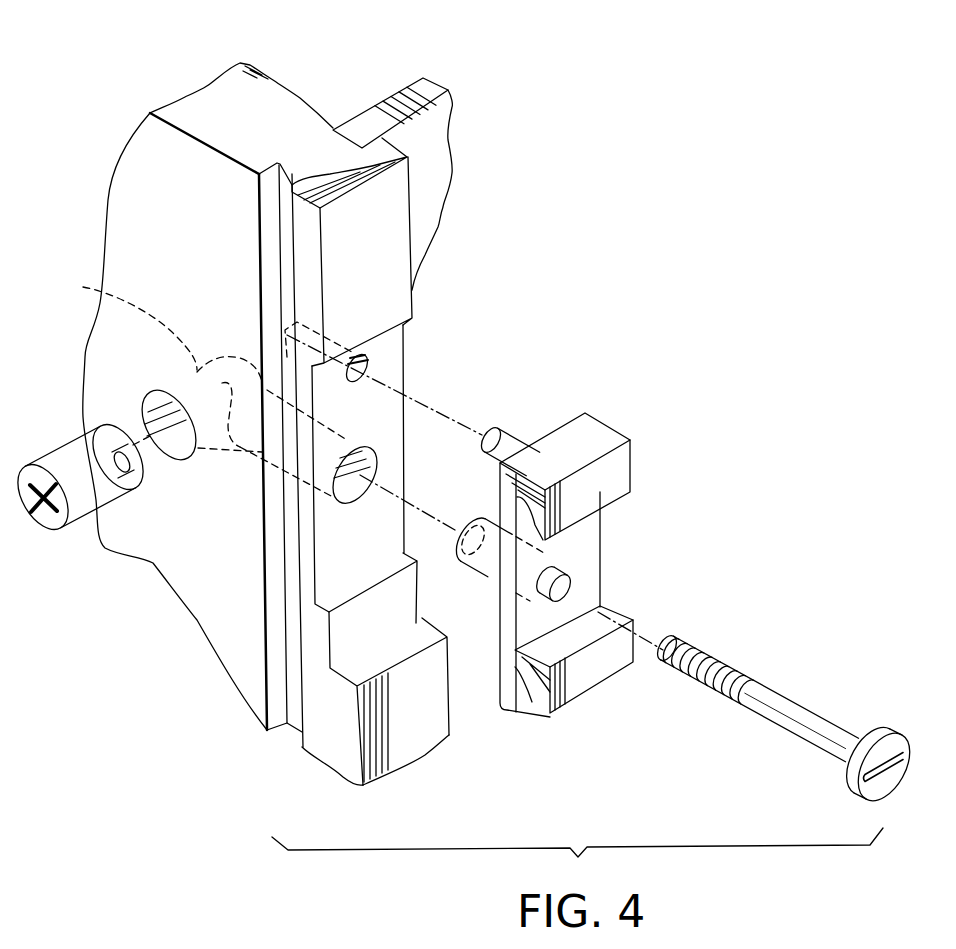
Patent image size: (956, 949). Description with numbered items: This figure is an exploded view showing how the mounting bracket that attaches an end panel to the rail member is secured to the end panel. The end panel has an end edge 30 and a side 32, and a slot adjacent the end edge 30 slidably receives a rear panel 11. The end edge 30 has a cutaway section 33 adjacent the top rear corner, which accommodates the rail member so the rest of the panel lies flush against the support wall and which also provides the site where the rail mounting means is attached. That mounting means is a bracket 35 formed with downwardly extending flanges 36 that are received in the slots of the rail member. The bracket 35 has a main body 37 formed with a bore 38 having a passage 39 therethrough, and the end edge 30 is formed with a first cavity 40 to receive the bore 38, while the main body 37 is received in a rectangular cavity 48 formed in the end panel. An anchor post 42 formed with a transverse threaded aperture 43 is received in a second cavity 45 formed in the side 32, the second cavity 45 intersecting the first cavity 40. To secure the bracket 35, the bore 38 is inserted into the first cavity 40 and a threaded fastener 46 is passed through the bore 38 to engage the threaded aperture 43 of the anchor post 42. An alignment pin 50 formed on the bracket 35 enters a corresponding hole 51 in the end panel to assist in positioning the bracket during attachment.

The rear panel 11 is at (417, 93).
The end edge 30 is at (425, 728).
The side 32 is at (195, 215).
The cutaway section 33 is at (390, 245).
The bracket 35 is at (572, 562).
The flange 36 is at (617, 462).
The main body 37 is at (507, 603).
The bore 38 is at (477, 515).
The passage 39 is at (577, 582).
The first cavity 40 is at (240, 440).
The anchor post 42 is at (80, 523).
The threaded aperture 43 is at (132, 487).
The second cavity 45 is at (128, 369).
The threaded fastener 46 is at (787, 703).
The rectangular cavity 48 is at (392, 343).
The alignment pin 50 is at (507, 437).
The hole 51 is at (370, 365).